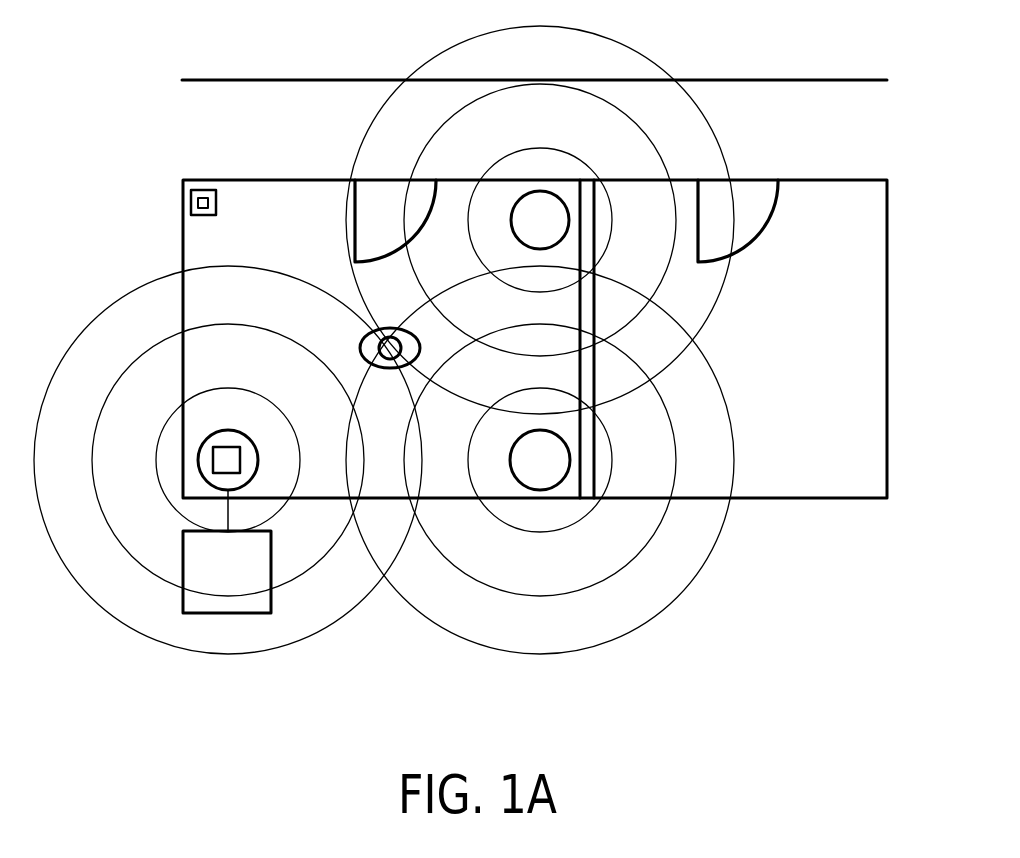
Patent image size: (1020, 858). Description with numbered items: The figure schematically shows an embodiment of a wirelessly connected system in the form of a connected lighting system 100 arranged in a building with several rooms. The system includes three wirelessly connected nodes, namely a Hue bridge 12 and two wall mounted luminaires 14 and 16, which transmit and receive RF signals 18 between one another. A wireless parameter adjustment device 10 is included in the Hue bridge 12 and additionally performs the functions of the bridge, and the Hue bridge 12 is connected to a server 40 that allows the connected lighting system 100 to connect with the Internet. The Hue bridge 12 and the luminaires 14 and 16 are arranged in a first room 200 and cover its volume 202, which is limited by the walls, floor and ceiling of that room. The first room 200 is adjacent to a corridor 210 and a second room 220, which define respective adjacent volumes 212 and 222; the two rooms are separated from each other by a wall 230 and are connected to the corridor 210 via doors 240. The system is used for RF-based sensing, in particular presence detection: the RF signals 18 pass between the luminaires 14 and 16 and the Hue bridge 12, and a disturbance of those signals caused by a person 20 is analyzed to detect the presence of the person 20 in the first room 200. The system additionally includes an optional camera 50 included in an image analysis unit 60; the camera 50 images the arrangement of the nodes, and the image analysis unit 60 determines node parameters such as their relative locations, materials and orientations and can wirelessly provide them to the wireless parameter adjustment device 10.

The wireless parameter adjustment device 10 is at (240, 458).
The Hue bridge 12 is at (200, 443).
The wall mounted luminaire 14 is at (565, 480).
The wall mounted luminaire 16 is at (522, 195).
The RF signals 18 is at (360, 283).
The person 20 is at (361, 345).
The server 40 is at (272, 604).
The camera 50 is at (200, 203).
The image analysis unit 60 is at (193, 193).
The connected lighting system 100 is at (283, 198).
The first room 200 is at (183, 228).
The volume 202 is at (218, 252).
The corridor 210 is at (228, 80).
The adjacent volume 212 is at (360, 90).
The second room 220 is at (767, 498).
The adjacent volume 222 is at (787, 448).
The wall 230 is at (587, 180).
The doors 240 is at (758, 190).